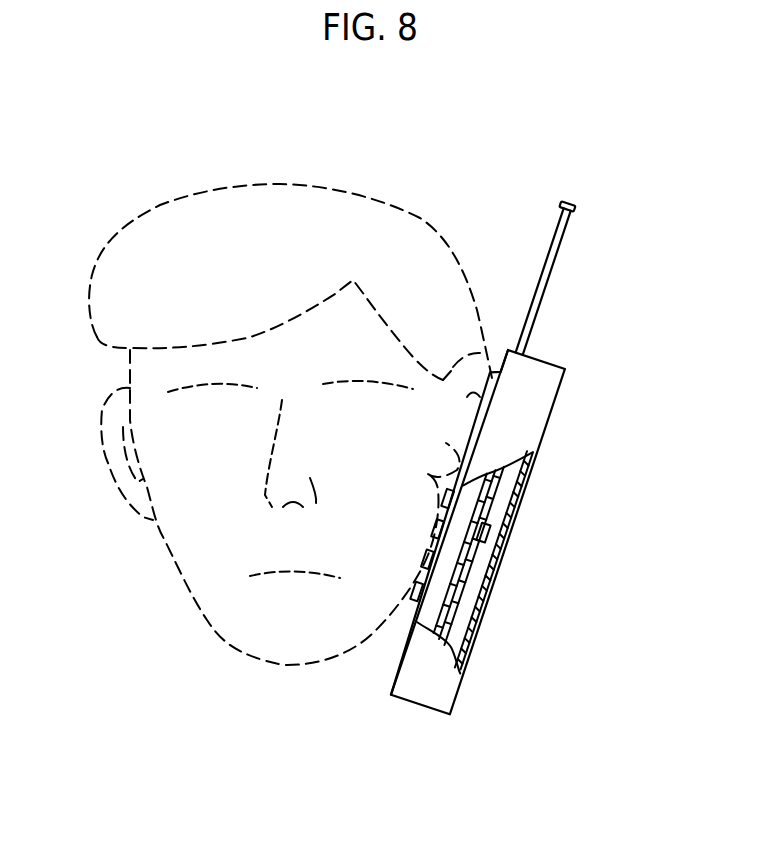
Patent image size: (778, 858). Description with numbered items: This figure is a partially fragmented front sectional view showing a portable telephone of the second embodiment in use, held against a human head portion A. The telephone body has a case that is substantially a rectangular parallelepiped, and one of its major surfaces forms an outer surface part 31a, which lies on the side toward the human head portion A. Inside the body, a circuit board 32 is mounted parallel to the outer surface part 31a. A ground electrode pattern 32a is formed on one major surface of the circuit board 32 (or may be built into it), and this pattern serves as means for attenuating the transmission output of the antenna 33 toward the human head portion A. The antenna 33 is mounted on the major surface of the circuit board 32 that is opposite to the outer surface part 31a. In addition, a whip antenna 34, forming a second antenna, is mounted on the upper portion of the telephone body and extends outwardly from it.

The human head portion A is at (188, 595).
The outer surface part 31a is at (565, 369).
The circuit board 32 is at (450, 627).
The ground electrode pattern 32a is at (423, 623).
The antenna 33 is at (490, 534).
The whip antenna 34 is at (547, 261).